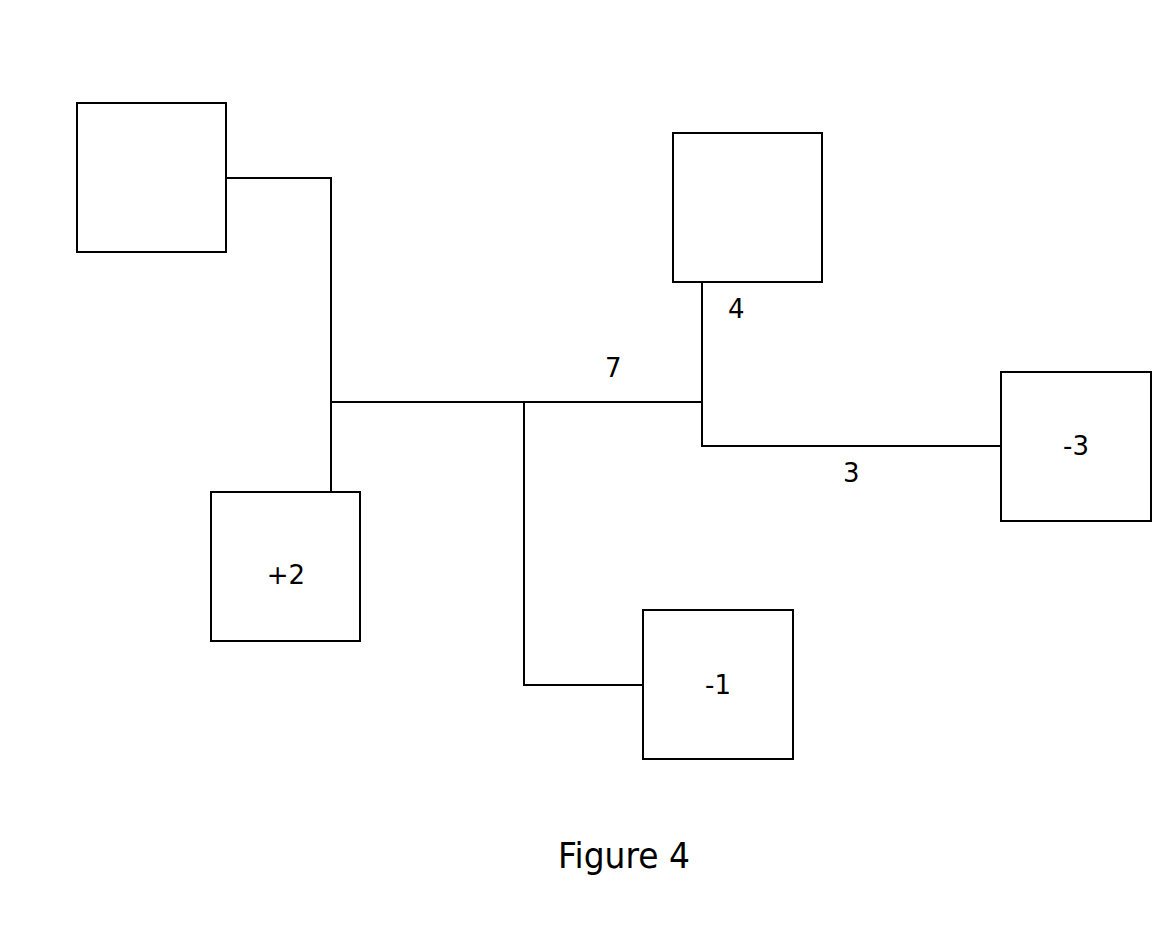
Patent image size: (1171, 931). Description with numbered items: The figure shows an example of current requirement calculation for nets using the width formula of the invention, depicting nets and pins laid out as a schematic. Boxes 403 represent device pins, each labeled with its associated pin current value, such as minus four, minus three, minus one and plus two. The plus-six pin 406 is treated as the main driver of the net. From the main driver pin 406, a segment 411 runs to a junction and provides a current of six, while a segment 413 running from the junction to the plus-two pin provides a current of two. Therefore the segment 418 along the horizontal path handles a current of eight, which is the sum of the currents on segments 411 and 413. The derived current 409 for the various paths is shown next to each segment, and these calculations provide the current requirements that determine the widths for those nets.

The +6 pin 406 is at (195, 103).
The device pins 403 is at (792, 133).
The segment 411 is at (331, 219).
The segment 418 is at (464, 372).
The segment 413 is at (331, 432).
The derived current 409 is at (488, 558).